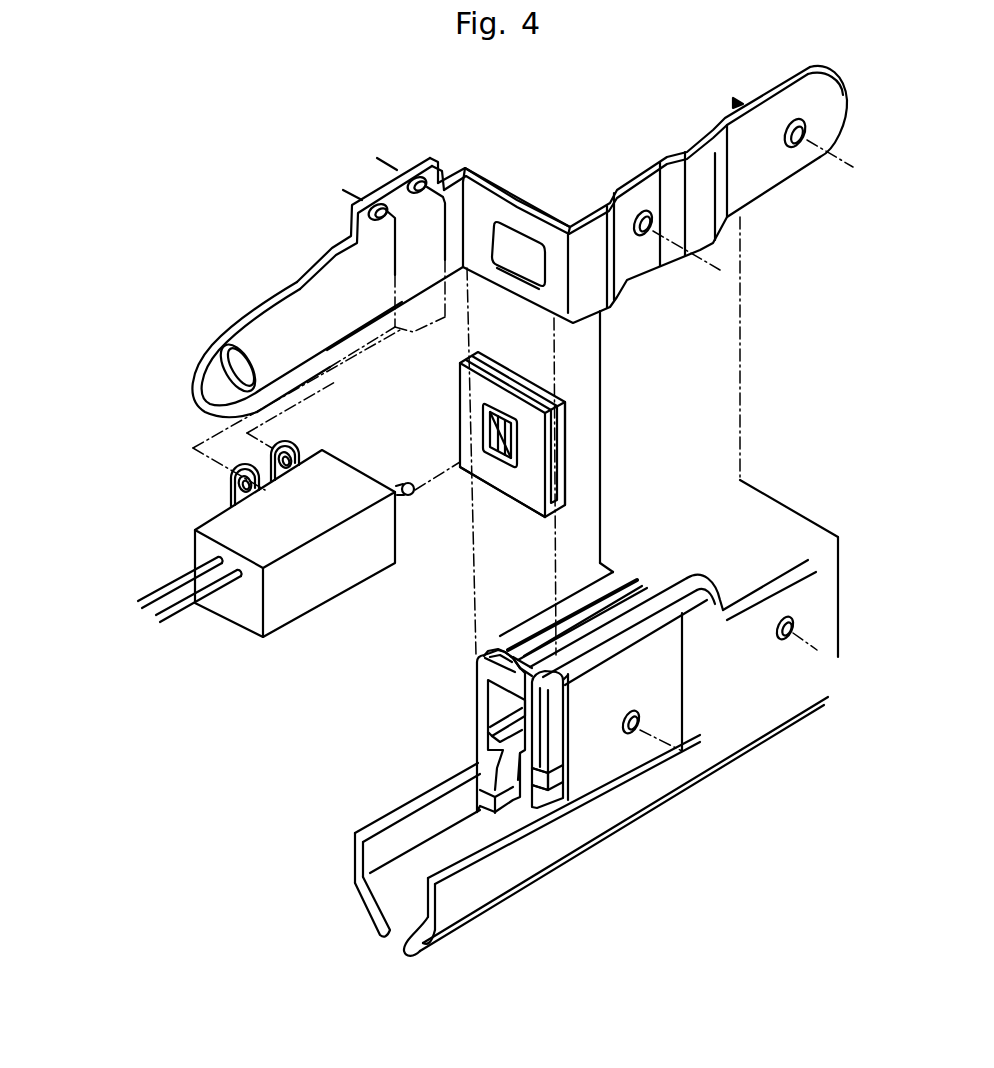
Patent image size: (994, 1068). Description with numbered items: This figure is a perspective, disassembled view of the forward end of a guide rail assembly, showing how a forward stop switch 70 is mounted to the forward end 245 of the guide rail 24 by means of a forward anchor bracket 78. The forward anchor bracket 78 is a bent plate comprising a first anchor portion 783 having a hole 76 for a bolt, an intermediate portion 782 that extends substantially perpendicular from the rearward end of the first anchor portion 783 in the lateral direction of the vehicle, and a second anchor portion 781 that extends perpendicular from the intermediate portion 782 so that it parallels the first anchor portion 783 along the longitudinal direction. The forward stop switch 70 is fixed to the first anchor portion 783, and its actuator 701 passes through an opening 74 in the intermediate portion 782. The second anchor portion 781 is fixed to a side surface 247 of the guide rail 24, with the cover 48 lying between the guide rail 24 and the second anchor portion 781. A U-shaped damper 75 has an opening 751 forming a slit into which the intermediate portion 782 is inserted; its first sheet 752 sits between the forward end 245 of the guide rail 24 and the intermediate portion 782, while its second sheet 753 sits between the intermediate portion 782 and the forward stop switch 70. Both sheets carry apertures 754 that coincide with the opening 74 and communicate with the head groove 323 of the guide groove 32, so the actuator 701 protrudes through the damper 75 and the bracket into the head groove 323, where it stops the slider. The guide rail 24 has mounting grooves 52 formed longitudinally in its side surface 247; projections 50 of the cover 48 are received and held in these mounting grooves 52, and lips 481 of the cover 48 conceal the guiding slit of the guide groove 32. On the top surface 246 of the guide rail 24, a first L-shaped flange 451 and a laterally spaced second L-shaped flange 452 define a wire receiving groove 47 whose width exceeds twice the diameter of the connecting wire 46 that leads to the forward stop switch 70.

The guide rail 24 is at (502, 727).
The guide groove 32 is at (470, 753).
The connecting wire 46 is at (192, 599).
The wire receiving groove 47 is at (506, 650).
The cover 48 is at (591, 833).
The projections 50 is at (560, 773).
The mounting grooves 52 is at (470, 747).
The forward stop switch 70 is at (318, 539).
The opening 74 is at (525, 243).
The damper 75 is at (518, 437).
The hole 76 is at (236, 360).
The forward anchor bracket 78 is at (310, 252).
The forward end 245 is at (482, 690).
The top surface 246 is at (568, 662).
The side surface 247 is at (553, 735).
The head groove 323 is at (500, 700).
The first L-shaped flange 451 is at (617, 605).
The second L-shaped flange 452 is at (658, 649).
The lips 481 is at (420, 952).
The actuator 701 is at (409, 498).
The opening 751 is at (537, 383).
The first sheet 752 is at (563, 412).
The second sheet 753 is at (535, 462).
The apertures 754 is at (497, 428).
The second anchor portion 781 is at (695, 168).
The intermediate portion 782 is at (512, 190).
The first anchor portion 783 is at (362, 318).